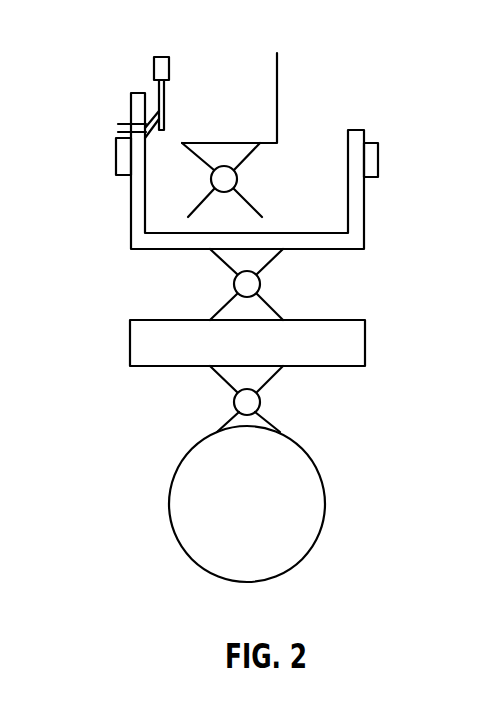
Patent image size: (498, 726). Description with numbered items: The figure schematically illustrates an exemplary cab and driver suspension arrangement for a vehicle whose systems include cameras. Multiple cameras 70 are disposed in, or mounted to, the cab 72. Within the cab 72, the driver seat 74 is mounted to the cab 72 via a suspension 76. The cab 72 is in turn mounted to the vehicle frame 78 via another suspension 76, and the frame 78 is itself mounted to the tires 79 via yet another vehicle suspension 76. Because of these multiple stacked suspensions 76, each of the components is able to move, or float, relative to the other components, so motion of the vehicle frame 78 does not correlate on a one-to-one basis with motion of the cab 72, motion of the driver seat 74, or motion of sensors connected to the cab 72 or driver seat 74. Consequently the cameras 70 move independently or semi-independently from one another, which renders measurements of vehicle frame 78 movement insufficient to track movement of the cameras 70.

The cameras 70 is at (131, 110).
The cab 72 is at (365, 207).
The driver seat 74 is at (277, 100).
The suspension 76 is at (240, 179).
The vehicle frame 78 is at (366, 343).
The tires 79 is at (325, 503).